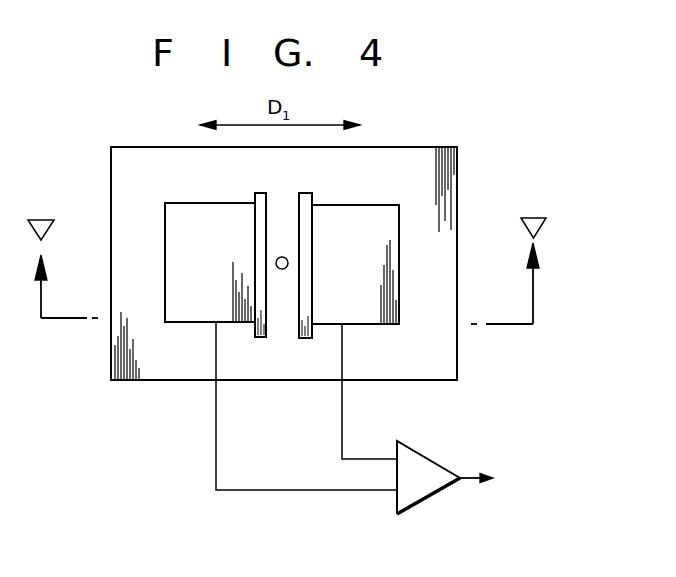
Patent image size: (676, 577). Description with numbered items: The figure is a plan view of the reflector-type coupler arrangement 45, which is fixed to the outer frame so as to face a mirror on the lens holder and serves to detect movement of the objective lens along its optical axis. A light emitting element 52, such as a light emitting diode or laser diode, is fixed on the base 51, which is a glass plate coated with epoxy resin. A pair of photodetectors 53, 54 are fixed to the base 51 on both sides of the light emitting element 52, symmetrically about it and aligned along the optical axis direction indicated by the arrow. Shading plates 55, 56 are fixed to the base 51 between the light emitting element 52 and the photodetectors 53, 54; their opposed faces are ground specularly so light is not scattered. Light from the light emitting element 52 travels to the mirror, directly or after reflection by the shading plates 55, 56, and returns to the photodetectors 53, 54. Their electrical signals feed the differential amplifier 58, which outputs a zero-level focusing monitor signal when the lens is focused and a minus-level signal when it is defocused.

The coupler arrangement 45 is at (443, 142).
The base 51 is at (449, 253).
The light emitting element 52 is at (282, 269).
The photodetector 53 is at (198, 318).
The photodetector 54 is at (381, 323).
The shading plate 55 is at (260, 193).
The shading plate 56 is at (308, 193).
The differential amplifier 58 is at (410, 447).